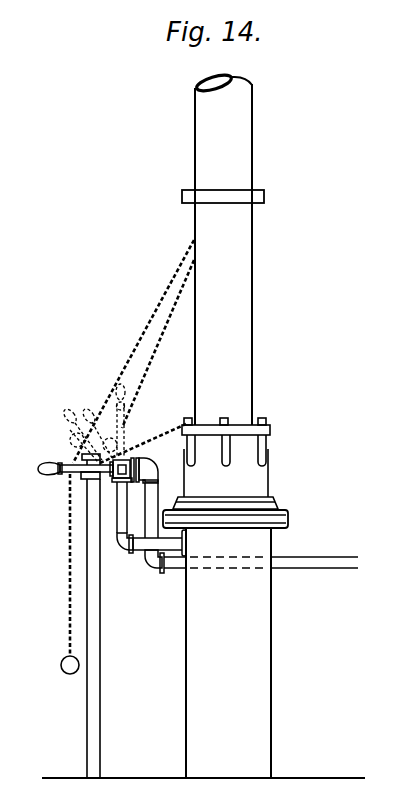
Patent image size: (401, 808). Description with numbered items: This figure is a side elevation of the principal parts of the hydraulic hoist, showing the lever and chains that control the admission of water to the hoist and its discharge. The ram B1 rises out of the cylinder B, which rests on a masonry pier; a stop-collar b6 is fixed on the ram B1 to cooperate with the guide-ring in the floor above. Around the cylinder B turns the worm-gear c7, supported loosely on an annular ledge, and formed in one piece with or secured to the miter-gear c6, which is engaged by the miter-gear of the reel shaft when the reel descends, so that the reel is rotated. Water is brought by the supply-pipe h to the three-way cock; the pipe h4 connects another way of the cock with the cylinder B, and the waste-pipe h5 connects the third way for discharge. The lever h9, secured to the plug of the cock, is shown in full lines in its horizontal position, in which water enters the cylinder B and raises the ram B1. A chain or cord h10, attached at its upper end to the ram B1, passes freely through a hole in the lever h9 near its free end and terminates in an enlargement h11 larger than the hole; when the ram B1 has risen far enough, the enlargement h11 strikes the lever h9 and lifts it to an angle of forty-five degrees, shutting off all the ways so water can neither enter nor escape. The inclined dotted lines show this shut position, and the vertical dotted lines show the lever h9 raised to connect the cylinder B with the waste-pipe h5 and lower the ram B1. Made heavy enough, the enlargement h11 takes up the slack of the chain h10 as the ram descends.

The ram B1 is at (223, 248).
The stop-collar b6 is at (265, 196).
The miter-gear c6 is at (232, 497).
The worm-gear c7 is at (289, 518).
The cylinder B is at (228, 653).
The supply-pipe h is at (158, 487).
The pipe h4 is at (127, 512).
The waste-pipe h5 is at (100, 705).
The lever h9 is at (51, 465).
The chain or cord h10 is at (60, 548).
The enlargement h11 is at (61, 665).